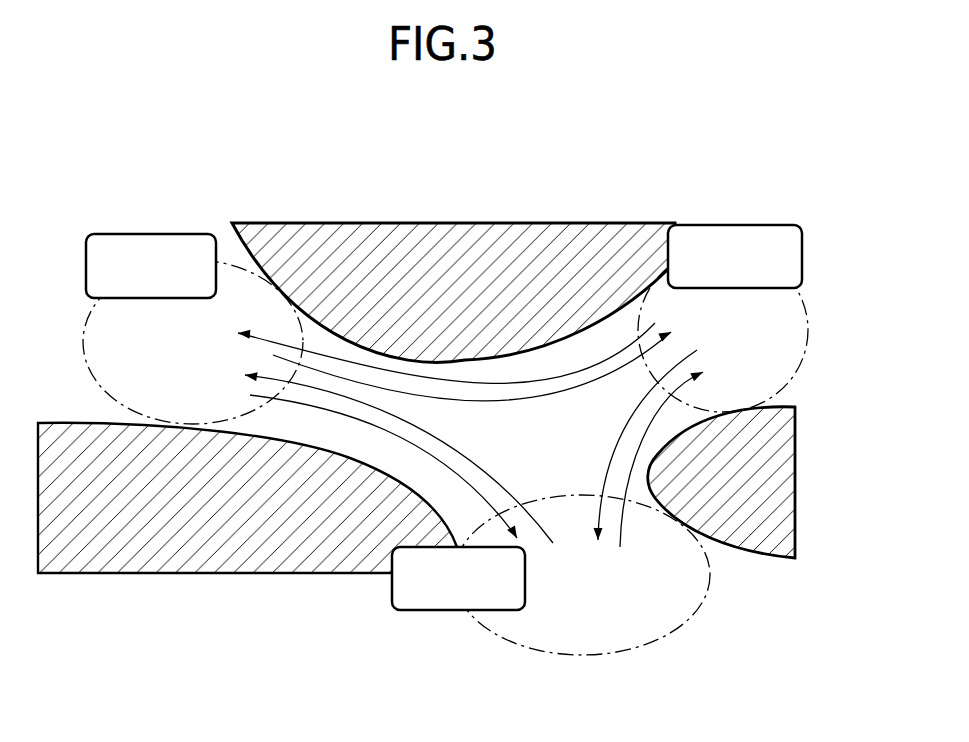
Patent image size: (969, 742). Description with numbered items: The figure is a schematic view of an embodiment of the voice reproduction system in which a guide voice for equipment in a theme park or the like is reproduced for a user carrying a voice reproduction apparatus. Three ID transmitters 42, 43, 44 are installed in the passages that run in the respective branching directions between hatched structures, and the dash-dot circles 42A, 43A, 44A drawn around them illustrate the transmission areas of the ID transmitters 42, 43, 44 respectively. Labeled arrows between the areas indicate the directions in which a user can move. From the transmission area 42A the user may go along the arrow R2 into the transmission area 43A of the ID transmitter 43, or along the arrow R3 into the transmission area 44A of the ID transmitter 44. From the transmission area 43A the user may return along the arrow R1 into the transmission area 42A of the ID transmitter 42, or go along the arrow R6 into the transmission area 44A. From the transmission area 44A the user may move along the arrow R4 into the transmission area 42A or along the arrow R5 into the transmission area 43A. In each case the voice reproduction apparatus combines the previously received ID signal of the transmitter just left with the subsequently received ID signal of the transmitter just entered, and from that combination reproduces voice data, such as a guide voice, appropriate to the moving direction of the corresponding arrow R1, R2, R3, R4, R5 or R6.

The ID transmitter 42 is at (137, 233).
The transmission area 42A is at (83, 323).
The ID transmitter 43 is at (410, 610).
The transmission area 43A is at (685, 602).
The ID transmitter 44 is at (747, 225).
The transmission area 44A is at (808, 315).
The arrow R1 is at (399, 457).
The arrow R2 is at (383, 466).
The arrow R3 is at (472, 380).
The arrow R4 is at (446, 354).
The arrow R5 is at (639, 445).
The arrow R6 is at (661, 459).